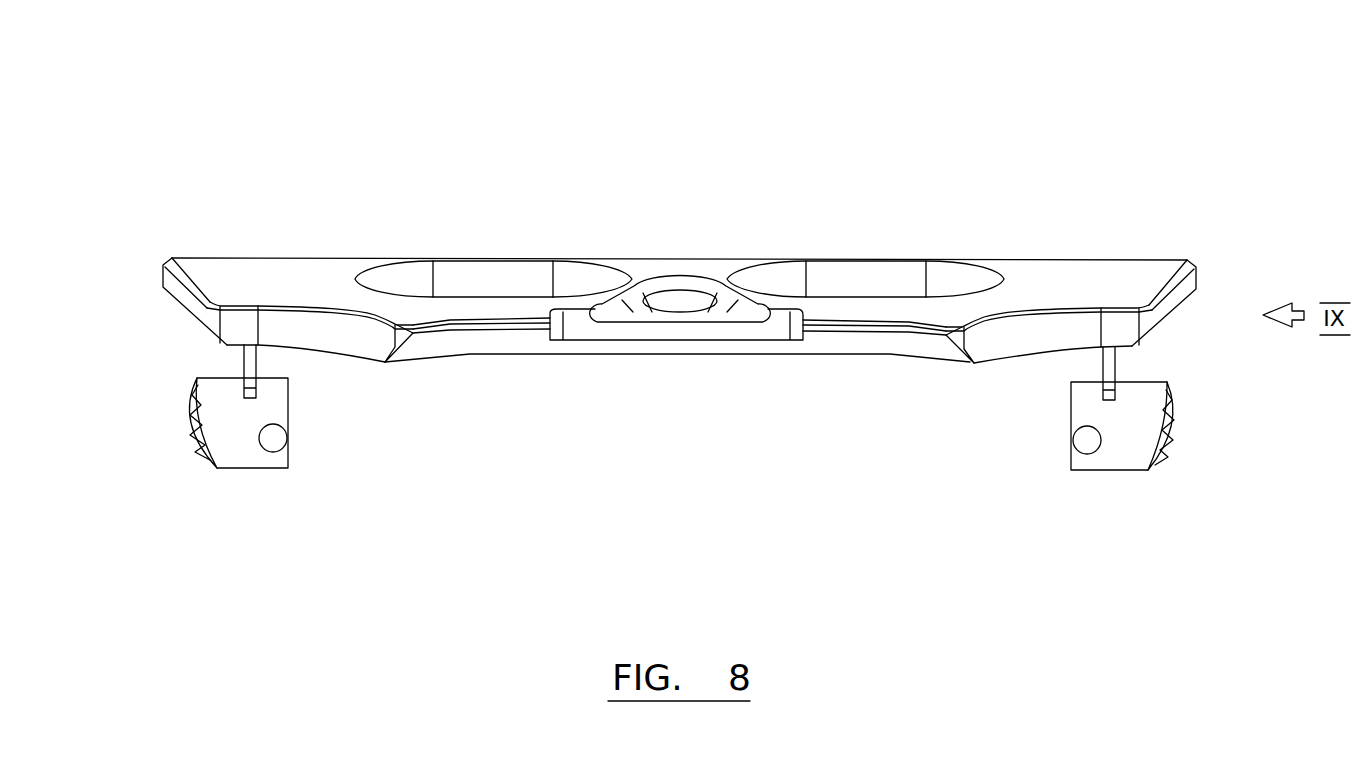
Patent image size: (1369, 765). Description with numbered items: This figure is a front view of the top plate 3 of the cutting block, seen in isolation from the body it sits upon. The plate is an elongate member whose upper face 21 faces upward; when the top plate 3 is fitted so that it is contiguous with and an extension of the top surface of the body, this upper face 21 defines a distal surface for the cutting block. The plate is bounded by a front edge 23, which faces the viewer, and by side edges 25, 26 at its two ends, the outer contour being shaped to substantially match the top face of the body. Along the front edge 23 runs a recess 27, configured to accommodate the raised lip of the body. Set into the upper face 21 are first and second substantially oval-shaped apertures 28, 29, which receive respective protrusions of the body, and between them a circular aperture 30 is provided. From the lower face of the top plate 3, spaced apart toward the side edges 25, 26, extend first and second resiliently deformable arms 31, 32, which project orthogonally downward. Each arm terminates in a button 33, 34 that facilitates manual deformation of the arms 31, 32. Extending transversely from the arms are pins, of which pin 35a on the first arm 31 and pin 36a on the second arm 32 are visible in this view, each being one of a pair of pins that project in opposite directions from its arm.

The top plate 3 is at (832, 190).
The upper face 21 is at (290, 272).
The front edge 23 is at (997, 341).
The side edge 25 is at (178, 290).
The side edge 26 is at (1201, 282).
The recess 27 is at (526, 343).
The first oval-shaped aperture 28 is at (486, 270).
The second oval-shaped aperture 29 is at (895, 270).
The circular aperture 30 is at (683, 298).
The first resiliently deformable arm 31 is at (249, 368).
The second resiliently deformable arm 32 is at (1115, 367).
The button 33 is at (200, 440).
The button 34 is at (1160, 437).
The pin 35a is at (272, 445).
The pin 36a is at (1088, 442).